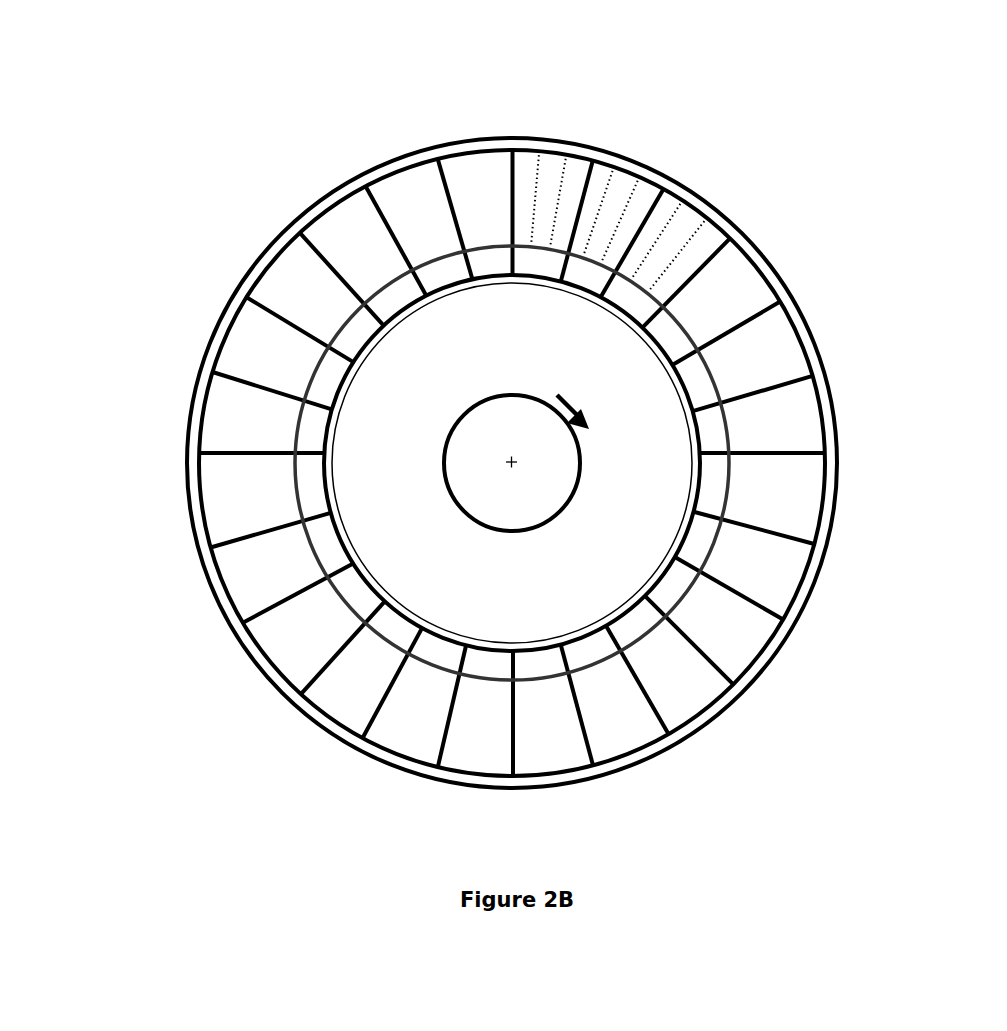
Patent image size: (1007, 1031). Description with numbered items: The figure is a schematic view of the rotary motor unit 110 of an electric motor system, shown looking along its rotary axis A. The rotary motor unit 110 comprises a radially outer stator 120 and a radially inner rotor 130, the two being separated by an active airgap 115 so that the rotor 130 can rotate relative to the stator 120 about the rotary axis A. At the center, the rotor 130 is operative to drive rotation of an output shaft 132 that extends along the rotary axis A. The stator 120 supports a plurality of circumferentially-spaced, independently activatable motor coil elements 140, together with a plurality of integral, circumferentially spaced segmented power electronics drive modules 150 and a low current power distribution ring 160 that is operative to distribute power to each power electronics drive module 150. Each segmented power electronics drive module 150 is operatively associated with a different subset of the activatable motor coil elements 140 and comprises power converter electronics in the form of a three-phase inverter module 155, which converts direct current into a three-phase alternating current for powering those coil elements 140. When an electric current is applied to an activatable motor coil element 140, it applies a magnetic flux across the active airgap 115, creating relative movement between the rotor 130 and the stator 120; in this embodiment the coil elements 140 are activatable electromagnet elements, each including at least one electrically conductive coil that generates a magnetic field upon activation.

The rotary motor unit 110 is at (275, 750).
The active airgap 115 is at (712, 420).
The stator 120 is at (266, 220).
The rotor 130 is at (577, 611).
The output shaft 132 is at (465, 500).
The activatable motor coil element 140 is at (540, 158).
The segmented power electronics drive module 150 is at (340, 195).
The 3-phase inverter module 155 is at (234, 424).
The low current power distribution ring 160 is at (678, 591).